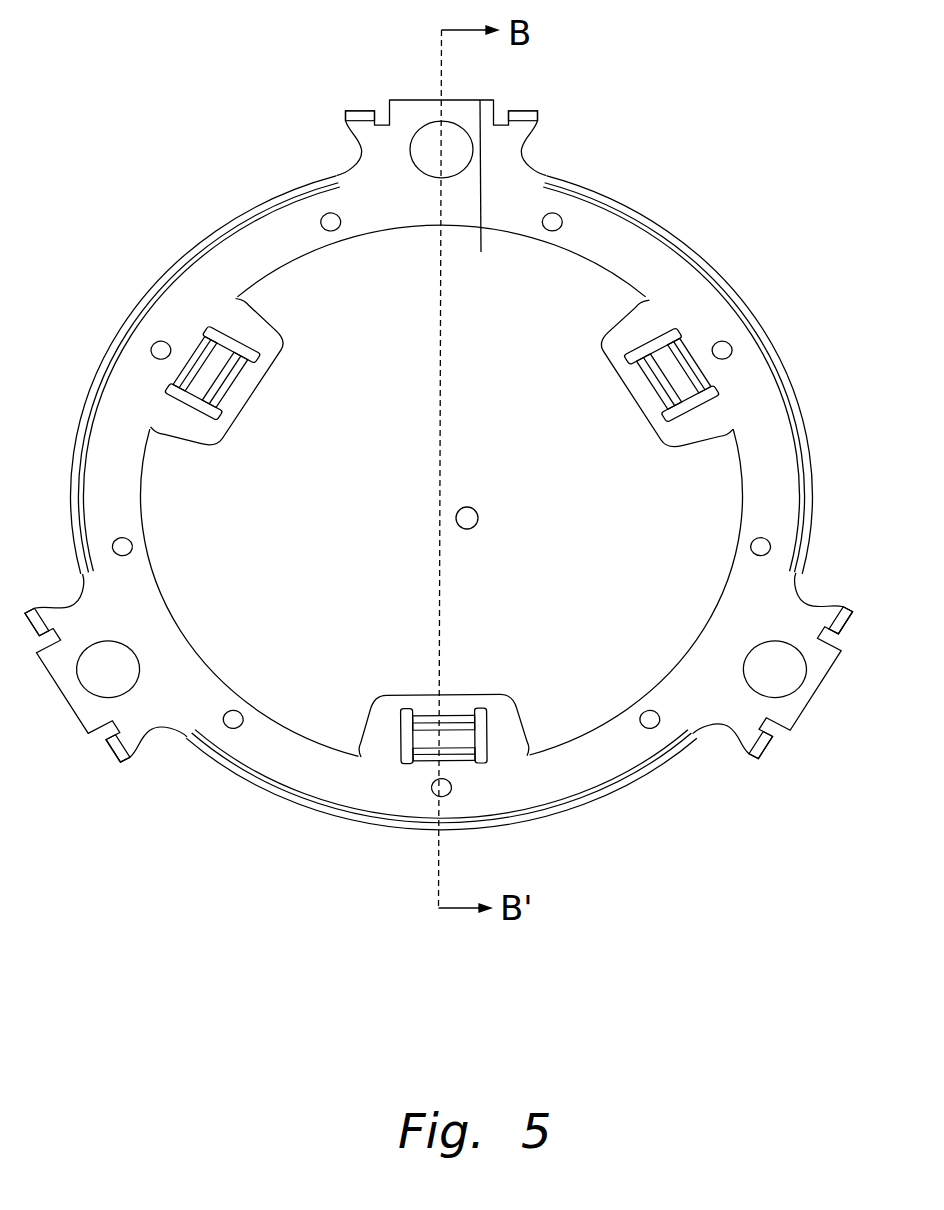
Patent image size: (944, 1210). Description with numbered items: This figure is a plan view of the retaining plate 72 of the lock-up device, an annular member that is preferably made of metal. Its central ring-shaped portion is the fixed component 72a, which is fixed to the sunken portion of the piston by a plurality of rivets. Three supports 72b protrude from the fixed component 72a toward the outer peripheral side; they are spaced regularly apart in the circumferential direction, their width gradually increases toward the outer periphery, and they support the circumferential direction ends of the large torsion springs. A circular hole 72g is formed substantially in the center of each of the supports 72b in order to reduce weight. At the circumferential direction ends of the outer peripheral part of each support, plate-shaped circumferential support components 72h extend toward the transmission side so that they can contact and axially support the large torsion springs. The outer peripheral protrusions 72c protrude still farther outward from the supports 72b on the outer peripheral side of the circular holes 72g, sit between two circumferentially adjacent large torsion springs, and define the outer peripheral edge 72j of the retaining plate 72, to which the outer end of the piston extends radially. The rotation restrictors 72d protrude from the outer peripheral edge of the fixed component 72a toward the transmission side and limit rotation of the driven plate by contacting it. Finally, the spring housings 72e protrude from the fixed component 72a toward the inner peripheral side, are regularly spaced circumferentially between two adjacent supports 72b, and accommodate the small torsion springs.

The retaining plate 72 is at (728, 256).
The fixed component 72a is at (632, 221).
The supports 72b is at (552, 142).
The outer peripheral protrusions 72c is at (421, 108).
The rotation restrictors 72d is at (172, 262).
The spring housings 72e is at (262, 338).
The circular hole 72g is at (414, 144).
The circumferential support components 72h is at (524, 113).
The outer peripheral edge 72j is at (481, 252).